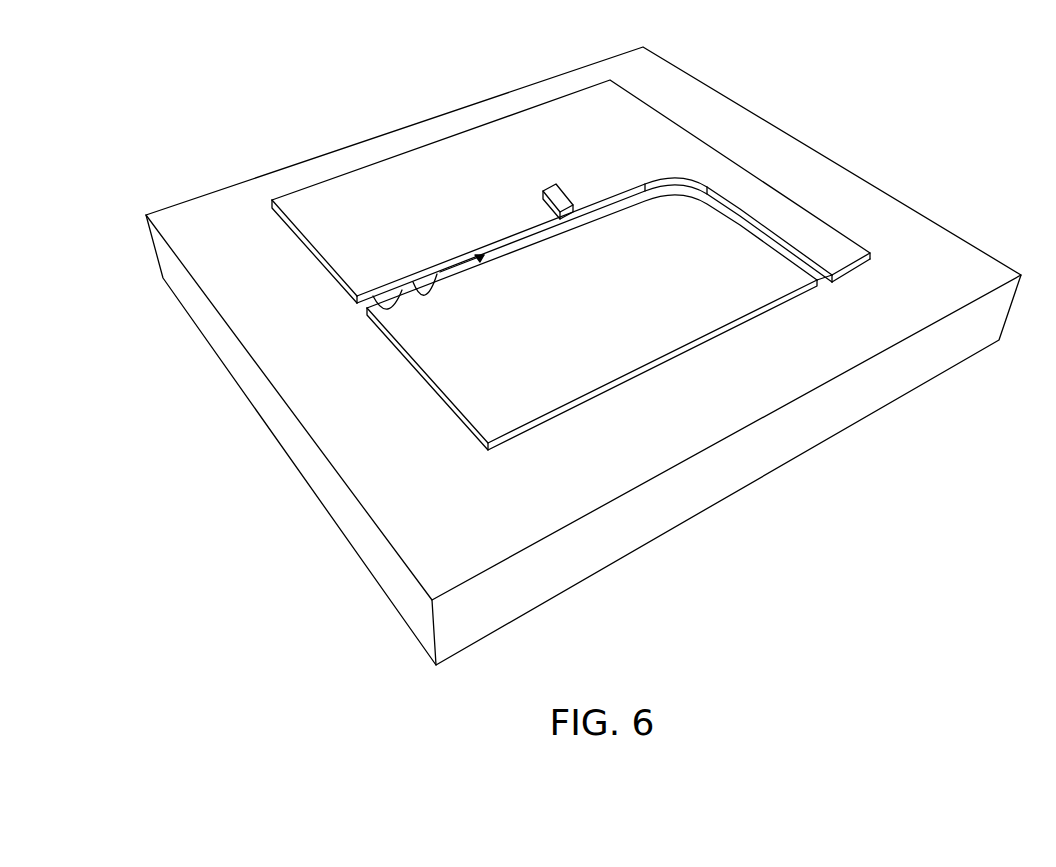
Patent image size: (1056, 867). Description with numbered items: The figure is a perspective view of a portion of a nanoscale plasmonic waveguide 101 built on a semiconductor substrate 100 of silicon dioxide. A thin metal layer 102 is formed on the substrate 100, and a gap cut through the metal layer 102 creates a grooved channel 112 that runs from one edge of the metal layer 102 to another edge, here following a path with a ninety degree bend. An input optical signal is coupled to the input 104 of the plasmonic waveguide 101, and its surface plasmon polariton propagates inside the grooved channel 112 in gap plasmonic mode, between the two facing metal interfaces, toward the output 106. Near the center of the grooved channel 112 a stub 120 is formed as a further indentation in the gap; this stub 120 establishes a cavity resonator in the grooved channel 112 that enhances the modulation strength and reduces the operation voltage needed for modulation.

The semiconductor substrate 100 is at (380, 477).
The plasmonic waveguide 101 is at (836, 53).
The metal layer 102 is at (459, 150).
The input 104 is at (366, 310).
The output 106 is at (822, 283).
The grooved channel 112 is at (753, 228).
The stub 120 is at (563, 193).